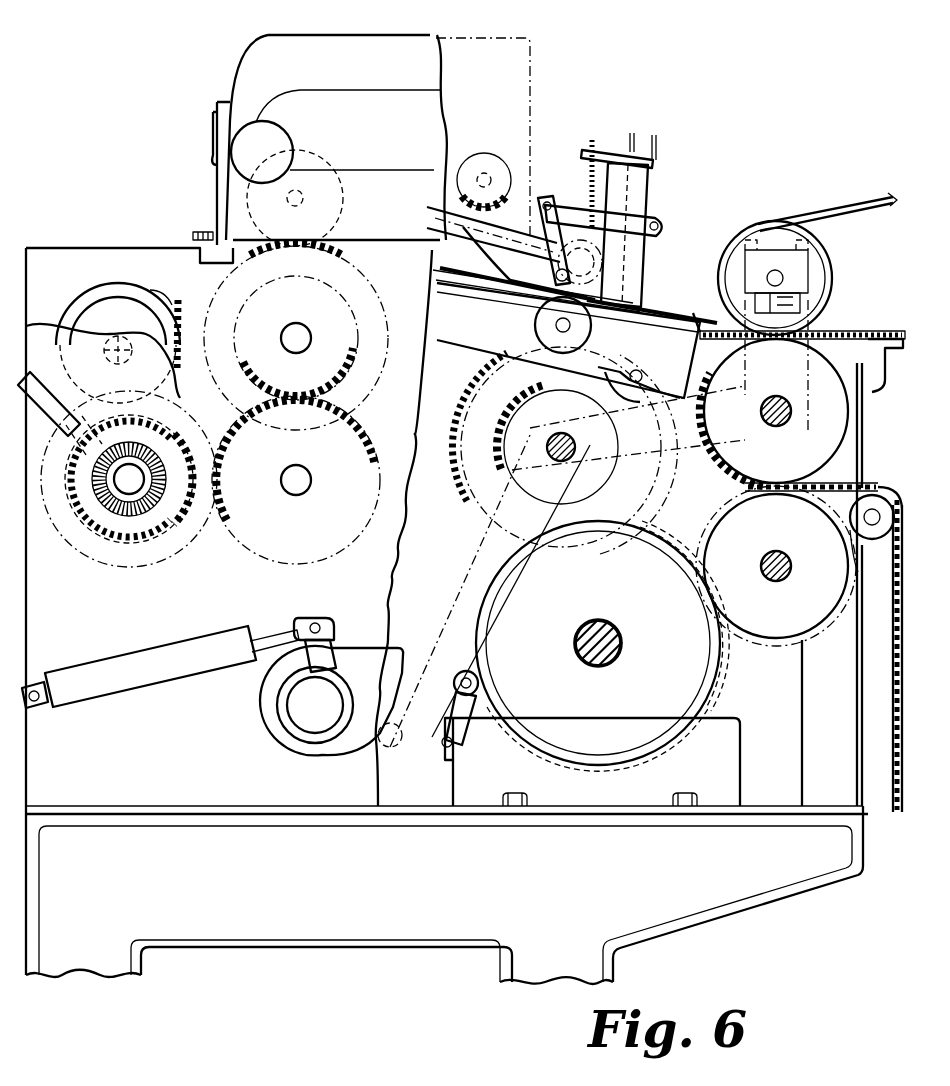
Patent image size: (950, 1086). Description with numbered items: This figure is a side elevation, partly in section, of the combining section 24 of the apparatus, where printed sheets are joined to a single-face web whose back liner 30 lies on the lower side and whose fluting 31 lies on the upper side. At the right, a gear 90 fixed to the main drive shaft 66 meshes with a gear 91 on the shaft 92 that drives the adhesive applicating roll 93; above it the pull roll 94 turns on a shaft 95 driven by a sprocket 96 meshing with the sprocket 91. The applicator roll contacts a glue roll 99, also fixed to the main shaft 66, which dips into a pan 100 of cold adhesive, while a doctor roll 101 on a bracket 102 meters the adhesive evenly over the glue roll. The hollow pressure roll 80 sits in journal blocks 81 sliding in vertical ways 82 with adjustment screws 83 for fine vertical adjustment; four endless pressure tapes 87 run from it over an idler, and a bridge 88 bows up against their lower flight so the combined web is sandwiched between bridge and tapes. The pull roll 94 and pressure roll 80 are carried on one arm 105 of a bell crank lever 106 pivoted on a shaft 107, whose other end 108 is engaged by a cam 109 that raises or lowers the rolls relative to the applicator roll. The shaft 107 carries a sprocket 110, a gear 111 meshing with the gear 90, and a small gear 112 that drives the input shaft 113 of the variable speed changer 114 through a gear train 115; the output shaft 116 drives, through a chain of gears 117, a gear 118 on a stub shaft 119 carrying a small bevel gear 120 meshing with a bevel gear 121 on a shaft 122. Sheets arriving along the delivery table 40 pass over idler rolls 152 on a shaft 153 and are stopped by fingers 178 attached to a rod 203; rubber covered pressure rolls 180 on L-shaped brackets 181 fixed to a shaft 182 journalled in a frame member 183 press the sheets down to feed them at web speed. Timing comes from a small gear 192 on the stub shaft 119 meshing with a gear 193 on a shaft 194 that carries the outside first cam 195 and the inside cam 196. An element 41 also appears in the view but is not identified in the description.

The combining section 24 is at (771, 52).
The back liner 30 is at (899, 826).
The fluting 31 is at (903, 802).
The delivery table 40 is at (442, 314).
The lever 41 is at (600, 283).
The main drive shaft 66 is at (616, 652).
The hollow pressure roll 80 is at (832, 262).
The journal blocks 81 is at (800, 247).
The vertical ways 82 is at (822, 258).
The adjustment screws 83 is at (805, 303).
The endless pressure tapes 87 is at (883, 202).
The bridge 88 is at (886, 360).
The gear 90 is at (703, 694).
The gear 91 is at (740, 650).
The shaft 92 is at (792, 566).
The adhesive applicating roll 93 is at (832, 648).
The pull roll 94 is at (856, 448).
The shaft 95 is at (792, 424).
The sprocket 96 is at (720, 463).
The glue roll 99 is at (702, 722).
The pan 100 is at (596, 762).
The doctor roll 101 is at (478, 680).
The bracket 102 is at (452, 714).
The arm 105 is at (814, 374).
The bell crank lever 106 is at (684, 477).
The shaft 107 is at (576, 447).
The other end 108 is at (437, 615).
The cam 109 is at (375, 672).
The sprocket 110 is at (447, 466).
The gear 111 is at (630, 505).
The small gear 112 is at (538, 461).
The input shaft 113 is at (486, 172).
The variable speed changer 114 is at (432, 42).
The gear train 115 is at (514, 170).
The output shaft 116 is at (300, 192).
The chain of gears 117 is at (360, 403).
The gear 118 is at (194, 536).
The stub shaft 119 is at (130, 488).
The small bevel gear 120 is at (150, 566).
The bevel gear 121 is at (66, 548).
The shaft 122 is at (63, 398).
The idler rolls 152 is at (545, 327).
The shaft 153 is at (571, 325).
The fingers 178 is at (698, 326).
The rubber covered pressure rolls 180 is at (598, 262).
The L-shaped brackets 181 is at (636, 205).
The shaft 182 is at (665, 222).
The frame member 183 is at (652, 170).
The small gear 192 is at (228, 402).
The gear 193 is at (80, 300).
The shaft 194 is at (118, 340).
The first cam 195 is at (103, 310).
The inside cam 196 is at (150, 298).
The rod 203 is at (648, 372).